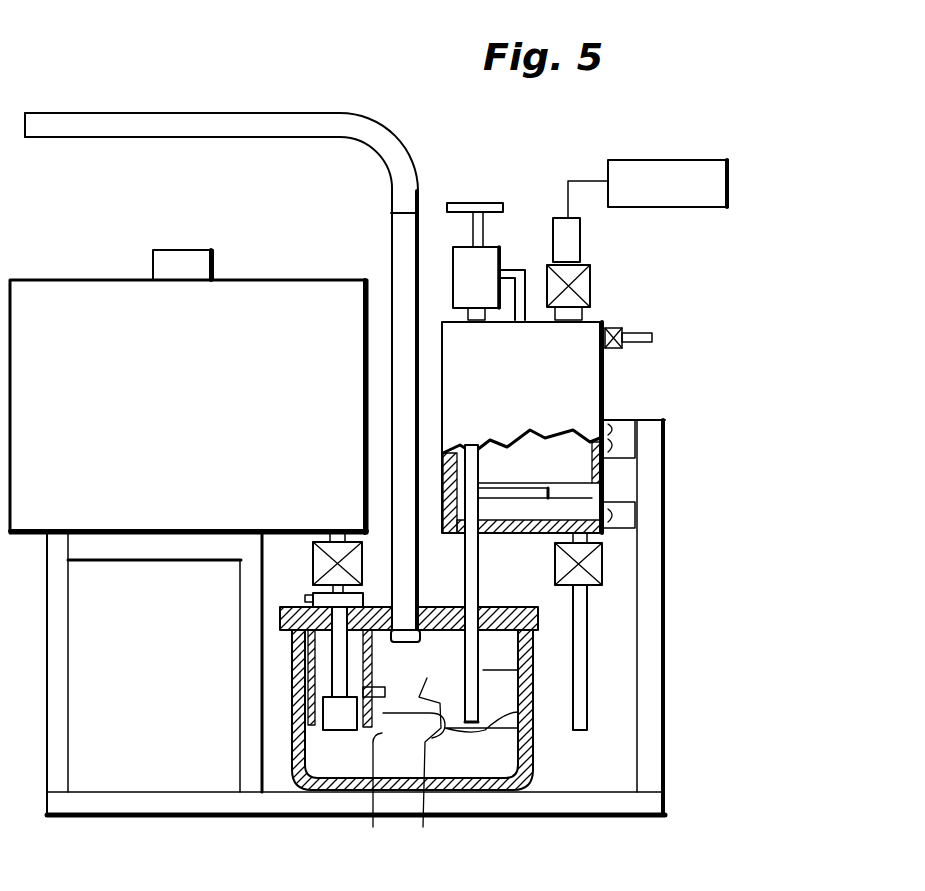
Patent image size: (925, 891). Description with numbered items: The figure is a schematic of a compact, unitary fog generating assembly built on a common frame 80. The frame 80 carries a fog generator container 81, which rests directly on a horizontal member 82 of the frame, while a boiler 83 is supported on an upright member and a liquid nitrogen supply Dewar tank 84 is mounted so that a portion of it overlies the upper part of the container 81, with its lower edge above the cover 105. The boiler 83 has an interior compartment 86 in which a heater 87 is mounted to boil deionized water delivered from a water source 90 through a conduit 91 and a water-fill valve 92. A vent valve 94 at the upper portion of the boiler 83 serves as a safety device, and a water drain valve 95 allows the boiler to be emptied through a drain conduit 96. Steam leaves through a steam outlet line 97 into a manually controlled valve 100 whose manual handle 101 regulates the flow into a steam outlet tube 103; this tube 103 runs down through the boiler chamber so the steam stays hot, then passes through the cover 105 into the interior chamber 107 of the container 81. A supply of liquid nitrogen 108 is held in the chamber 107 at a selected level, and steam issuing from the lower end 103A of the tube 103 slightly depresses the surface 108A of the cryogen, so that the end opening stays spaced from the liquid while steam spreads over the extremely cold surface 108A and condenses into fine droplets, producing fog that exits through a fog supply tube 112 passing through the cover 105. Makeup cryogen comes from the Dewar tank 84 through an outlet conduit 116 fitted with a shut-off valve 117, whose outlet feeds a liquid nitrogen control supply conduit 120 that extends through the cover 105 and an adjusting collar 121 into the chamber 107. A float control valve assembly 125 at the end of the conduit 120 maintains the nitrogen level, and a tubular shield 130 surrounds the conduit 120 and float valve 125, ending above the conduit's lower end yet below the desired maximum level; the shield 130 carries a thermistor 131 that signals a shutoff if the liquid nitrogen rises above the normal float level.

The frame 80 is at (658, 473).
The fog generator container 81 is at (527, 792).
The horizontal member 82 is at (200, 802).
The boiler 83 is at (591, 329).
The liquid nitrogen supply Dewar tank 84 is at (109, 288).
The interior compartment 86 is at (577, 470).
The heater 87 is at (503, 490).
The water source 90 is at (682, 162).
The conduit 91 is at (580, 243).
The water-fill valve 92 is at (590, 287).
The vent valve 94 is at (622, 348).
The water drain valve 95 is at (602, 560).
The drain conduit 96 is at (587, 665).
The steam outlet line 97 is at (512, 268).
The manually controlled valve 100 is at (454, 263).
The manual handle 101 is at (485, 203).
The steam outlet tube 103 is at (478, 548).
The lower end 103A is at (518, 728).
The cover 105 is at (498, 608).
The interior chamber 107 is at (426, 766).
The supply of liquid nitrogen 108 is at (498, 766).
The surface 108A is at (406, 657).
The fog supply tube 112 is at (391, 237).
The outlet conduit 116 is at (327, 542).
The shut-off valve 117 is at (313, 553).
The liquid nitrogen control supply conduit 120 is at (332, 656).
The adjusting collar 121 is at (317, 595).
The float control valve assembly 125 is at (333, 715).
The tubular shield 130 is at (313, 678).
The thermistor 131 is at (381, 793).